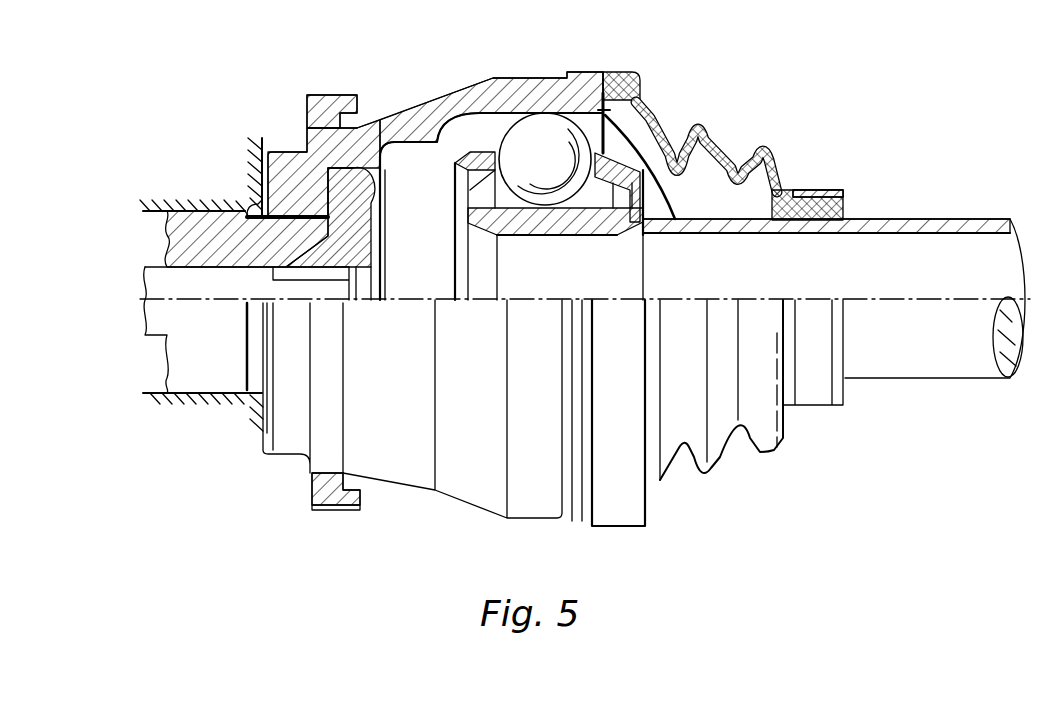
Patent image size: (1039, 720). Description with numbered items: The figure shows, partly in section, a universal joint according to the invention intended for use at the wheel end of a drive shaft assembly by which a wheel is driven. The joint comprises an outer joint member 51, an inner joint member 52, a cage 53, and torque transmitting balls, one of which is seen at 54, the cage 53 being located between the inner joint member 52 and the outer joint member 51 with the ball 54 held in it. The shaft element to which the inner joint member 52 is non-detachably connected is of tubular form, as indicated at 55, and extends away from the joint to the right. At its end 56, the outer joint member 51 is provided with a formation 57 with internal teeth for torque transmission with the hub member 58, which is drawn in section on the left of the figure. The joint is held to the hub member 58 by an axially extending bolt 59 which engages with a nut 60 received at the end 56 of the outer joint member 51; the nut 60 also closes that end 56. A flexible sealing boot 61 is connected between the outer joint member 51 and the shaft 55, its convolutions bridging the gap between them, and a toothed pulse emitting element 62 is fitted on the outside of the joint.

The outer joint member 51 is at (508, 85).
The inner joint member 52 is at (585, 228).
The cage 53 is at (627, 170).
The torque transmitting ball 54 is at (542, 132).
The shaft 55 is at (927, 218).
The end of outer joint member 56 is at (277, 160).
The formation with internal teeth 57 is at (278, 198).
The hub member 58 is at (173, 231).
The bolt 59 is at (155, 285).
The nut 60 is at (350, 217).
The flexible sealing boot 61 is at (720, 138).
The toothed pulse emitting element 62 is at (317, 492).